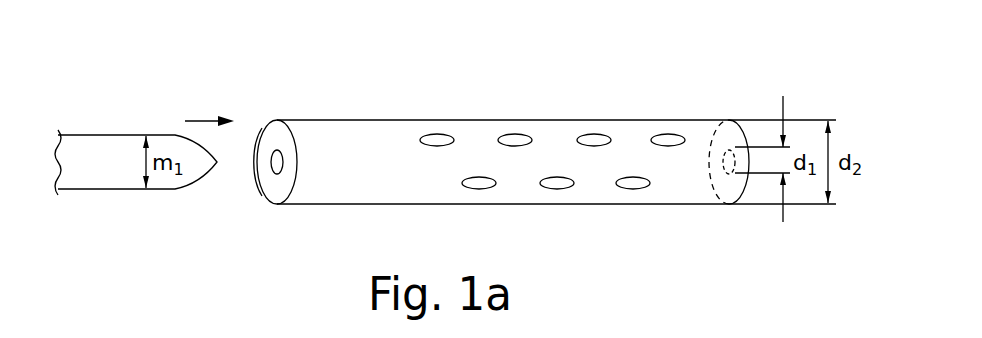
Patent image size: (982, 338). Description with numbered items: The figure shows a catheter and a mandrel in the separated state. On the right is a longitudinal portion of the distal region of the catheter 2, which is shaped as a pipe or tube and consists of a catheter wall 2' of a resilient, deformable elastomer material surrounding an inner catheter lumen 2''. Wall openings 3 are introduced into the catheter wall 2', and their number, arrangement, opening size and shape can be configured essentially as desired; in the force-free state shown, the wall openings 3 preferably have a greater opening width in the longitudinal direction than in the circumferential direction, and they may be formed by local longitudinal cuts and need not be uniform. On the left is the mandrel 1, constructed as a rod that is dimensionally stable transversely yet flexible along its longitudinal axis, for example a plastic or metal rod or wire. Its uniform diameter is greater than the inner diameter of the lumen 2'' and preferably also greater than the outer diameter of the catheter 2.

The mandrel 1 is at (86, 148).
The catheter 2 is at (503, 115).
The catheter wall 2' is at (242, 128).
The inner catheter lumen 2'' is at (301, 123).
The wall openings 3 is at (594, 130).